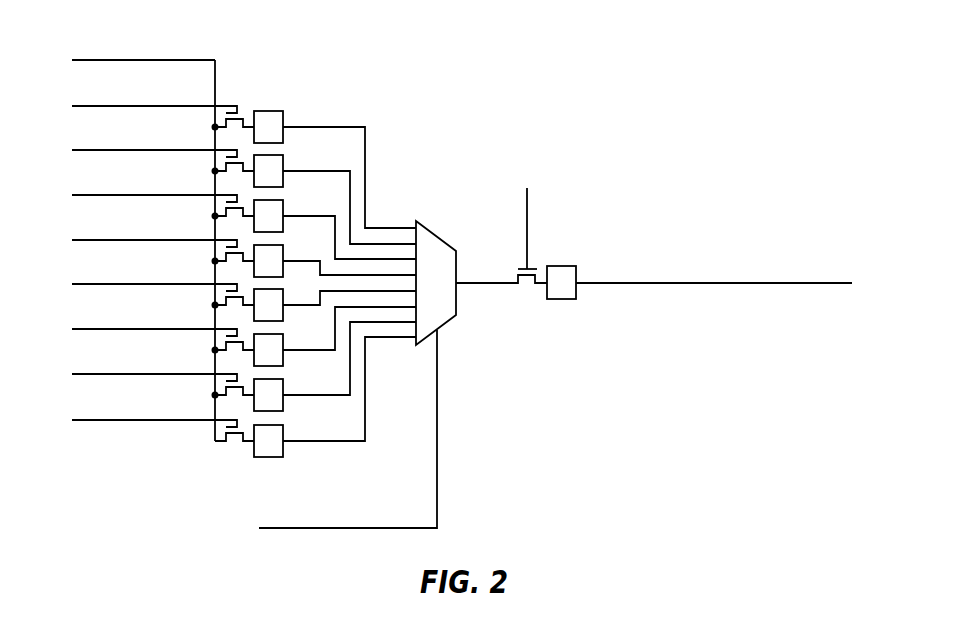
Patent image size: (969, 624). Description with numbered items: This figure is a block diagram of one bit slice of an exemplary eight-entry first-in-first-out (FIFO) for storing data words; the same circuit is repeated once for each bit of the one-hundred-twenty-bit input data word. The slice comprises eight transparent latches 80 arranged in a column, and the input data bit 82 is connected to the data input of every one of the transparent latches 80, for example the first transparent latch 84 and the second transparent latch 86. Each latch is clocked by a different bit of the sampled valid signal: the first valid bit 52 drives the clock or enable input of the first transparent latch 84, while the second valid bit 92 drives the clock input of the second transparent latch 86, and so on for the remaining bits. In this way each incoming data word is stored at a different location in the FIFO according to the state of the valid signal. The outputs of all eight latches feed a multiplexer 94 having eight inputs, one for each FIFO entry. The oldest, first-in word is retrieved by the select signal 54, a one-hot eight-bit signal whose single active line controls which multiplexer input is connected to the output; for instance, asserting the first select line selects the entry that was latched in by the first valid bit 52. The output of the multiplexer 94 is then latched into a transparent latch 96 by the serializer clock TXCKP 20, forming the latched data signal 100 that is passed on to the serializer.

The transparent latches 80 is at (268, 42).
The Data[0] 82 is at (80, 59).
The Valid[0] 52 is at (80, 105).
The Valid[1] 92 is at (80, 149).
The first transparent latch 84 is at (284, 118).
The second transparent latch 86 is at (284, 162).
The multiplexer 94 is at (433, 234).
The select signal 54 is at (437, 478).
The serializer clock TXCKP 20 is at (527, 250).
The transparent latch 96 is at (560, 266).
The Data_Latched[0] signal 100 is at (757, 283).